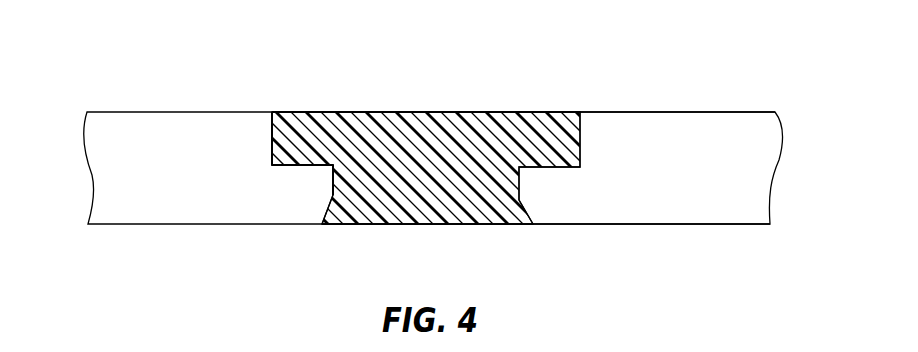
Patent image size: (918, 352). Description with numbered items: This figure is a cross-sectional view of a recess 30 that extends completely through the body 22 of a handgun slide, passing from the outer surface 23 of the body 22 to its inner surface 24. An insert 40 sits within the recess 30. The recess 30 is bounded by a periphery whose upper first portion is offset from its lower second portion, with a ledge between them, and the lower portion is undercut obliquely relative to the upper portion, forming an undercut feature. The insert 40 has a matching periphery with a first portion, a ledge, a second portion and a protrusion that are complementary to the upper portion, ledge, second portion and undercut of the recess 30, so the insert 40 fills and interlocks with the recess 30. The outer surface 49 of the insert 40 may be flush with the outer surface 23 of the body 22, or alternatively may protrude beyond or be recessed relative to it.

The body 22 is at (746, 94).
The outer surface 23 is at (637, 112).
The inner surface 24 is at (620, 225).
The recess 30 is at (498, 155).
The insert 40 is at (455, 130).
The outer surface of the insert 49 is at (413, 112).